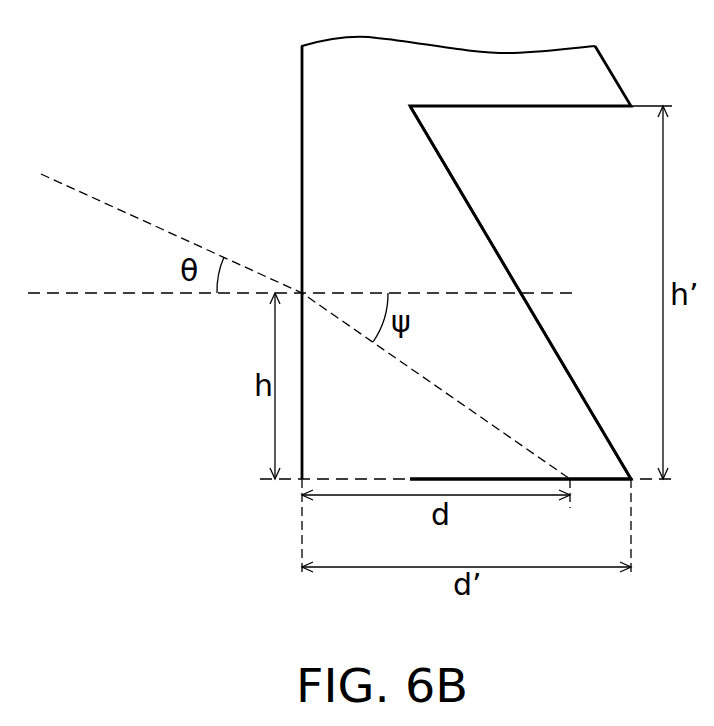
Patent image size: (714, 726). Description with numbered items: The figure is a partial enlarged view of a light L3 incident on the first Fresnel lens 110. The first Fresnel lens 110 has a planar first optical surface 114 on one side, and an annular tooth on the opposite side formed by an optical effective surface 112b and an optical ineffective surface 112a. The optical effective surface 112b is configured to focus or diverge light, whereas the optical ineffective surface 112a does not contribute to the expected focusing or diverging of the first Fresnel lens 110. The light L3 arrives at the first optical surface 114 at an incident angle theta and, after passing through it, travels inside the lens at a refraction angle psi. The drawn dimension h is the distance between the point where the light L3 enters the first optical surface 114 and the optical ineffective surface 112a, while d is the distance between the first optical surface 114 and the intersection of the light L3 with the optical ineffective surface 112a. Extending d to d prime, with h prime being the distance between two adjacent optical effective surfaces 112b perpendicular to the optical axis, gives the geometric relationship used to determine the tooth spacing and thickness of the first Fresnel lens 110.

The first Fresnel lens 110 is at (556, 369).
The optical ineffective surface 112a is at (605, 482).
The optical effective surface 112b is at (485, 227).
The first optical surface 114 is at (301, 150).
The light L3 is at (78, 190).